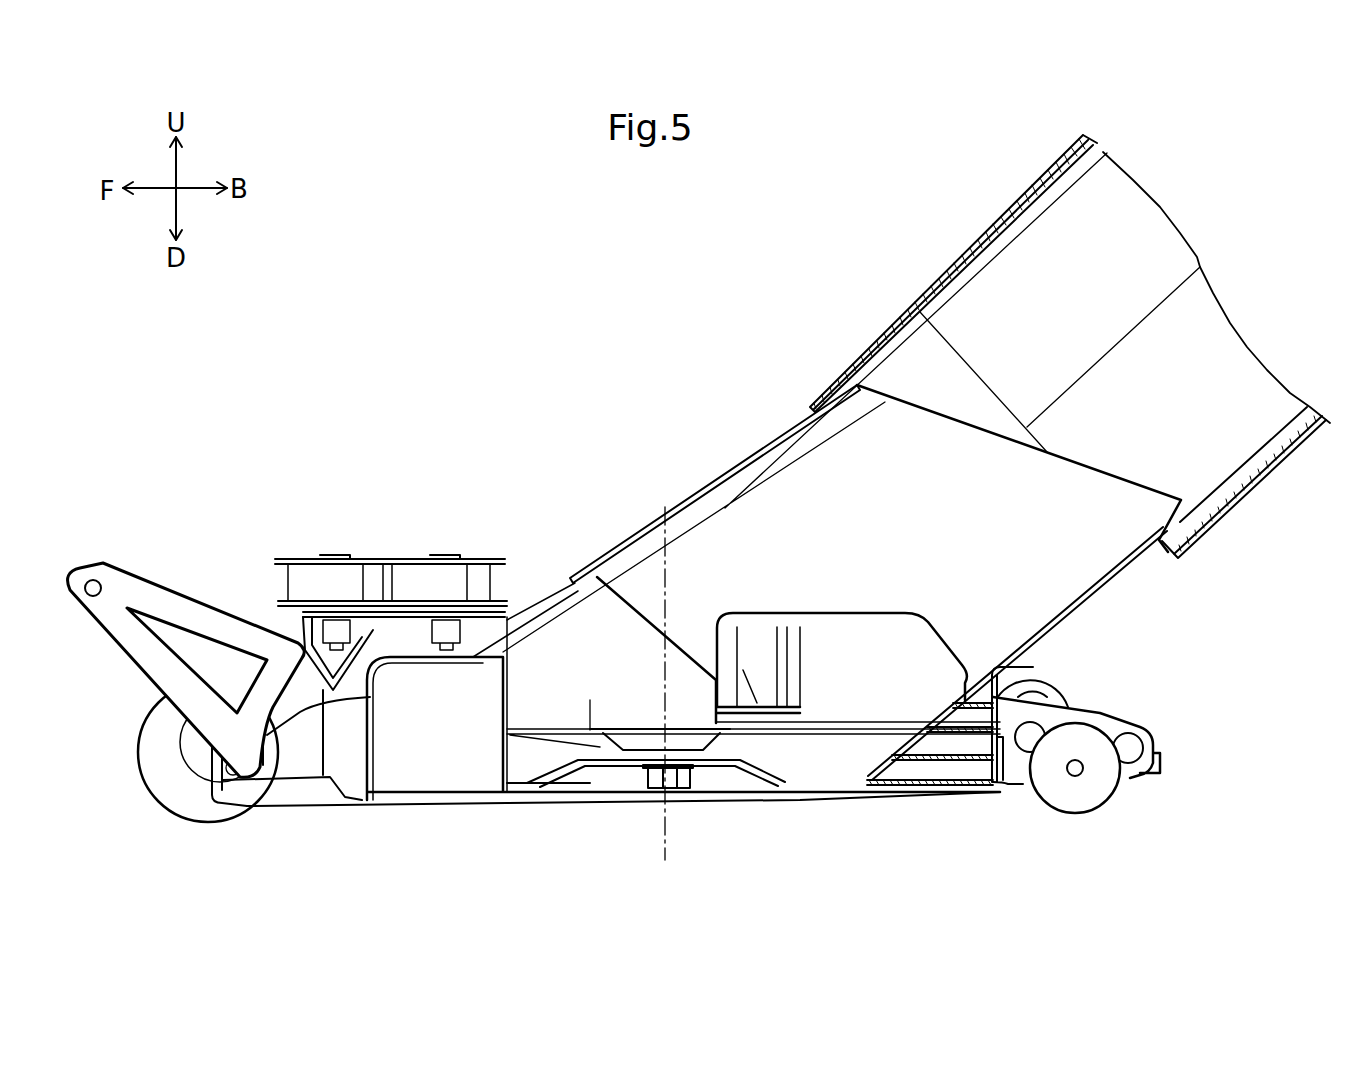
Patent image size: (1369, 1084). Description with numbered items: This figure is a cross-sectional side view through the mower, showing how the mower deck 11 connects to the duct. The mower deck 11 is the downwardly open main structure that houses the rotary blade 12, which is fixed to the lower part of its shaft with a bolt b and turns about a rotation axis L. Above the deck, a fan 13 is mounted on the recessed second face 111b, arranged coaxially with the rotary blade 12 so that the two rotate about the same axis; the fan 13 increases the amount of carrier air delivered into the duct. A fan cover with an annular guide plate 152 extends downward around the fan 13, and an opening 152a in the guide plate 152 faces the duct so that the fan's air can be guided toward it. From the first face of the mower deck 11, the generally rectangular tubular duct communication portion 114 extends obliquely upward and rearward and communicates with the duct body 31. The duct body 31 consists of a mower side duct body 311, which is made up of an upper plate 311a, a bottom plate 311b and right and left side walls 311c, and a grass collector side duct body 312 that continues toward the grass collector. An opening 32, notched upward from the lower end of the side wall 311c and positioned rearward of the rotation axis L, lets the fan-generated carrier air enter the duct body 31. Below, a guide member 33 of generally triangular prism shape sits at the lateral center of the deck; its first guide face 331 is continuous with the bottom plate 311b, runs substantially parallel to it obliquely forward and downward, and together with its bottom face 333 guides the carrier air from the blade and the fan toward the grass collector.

The mower deck 11 is at (376, 745).
The rotary blade 12 is at (560, 790).
The fan 13 is at (757, 652).
The duct body 31 is at (1206, 516).
The opening 32 is at (777, 497).
The guide member 33 is at (910, 784).
The duct communication portion 114 is at (575, 588).
The second face 111b is at (833, 690).
The guide plate 152 is at (913, 688).
The opening 152a is at (775, 655).
The mower side duct body 311 is at (655, 510).
The upper plate 311a is at (735, 492).
The bottom plate 311b is at (1131, 522).
The side wall 311c is at (850, 643).
The grass collector side duct body 312 is at (972, 255).
The first guide face 331 is at (915, 792).
The bottom face 333 is at (963, 790).
The bolt b is at (685, 790).
The rotation axis L is at (669, 700).